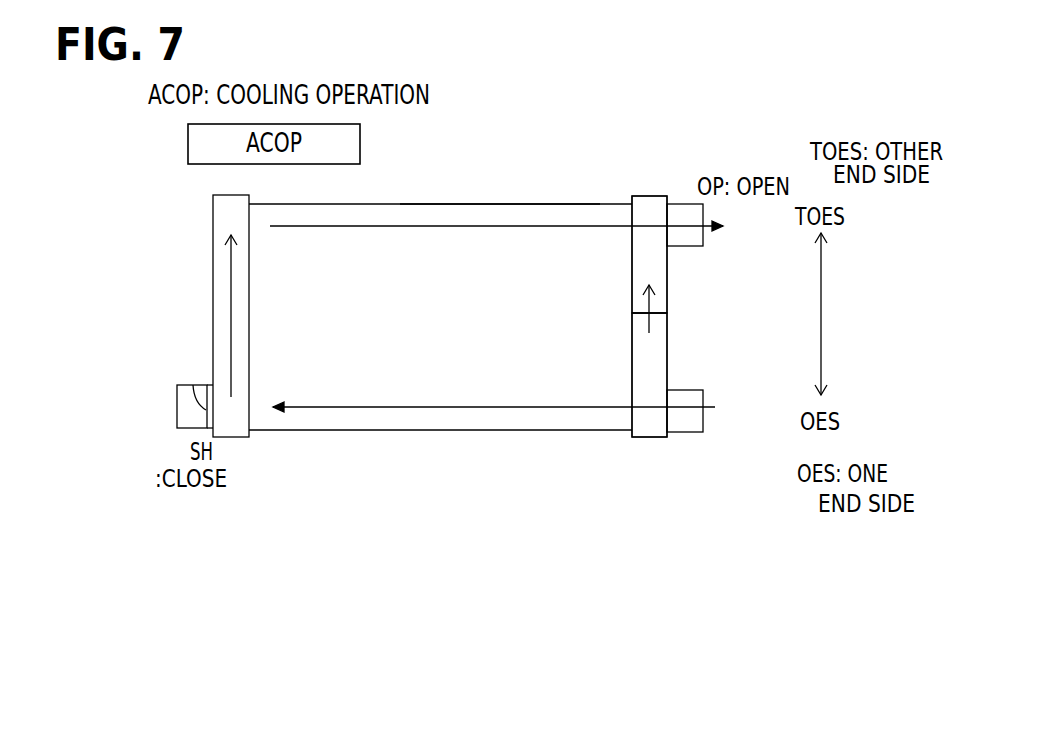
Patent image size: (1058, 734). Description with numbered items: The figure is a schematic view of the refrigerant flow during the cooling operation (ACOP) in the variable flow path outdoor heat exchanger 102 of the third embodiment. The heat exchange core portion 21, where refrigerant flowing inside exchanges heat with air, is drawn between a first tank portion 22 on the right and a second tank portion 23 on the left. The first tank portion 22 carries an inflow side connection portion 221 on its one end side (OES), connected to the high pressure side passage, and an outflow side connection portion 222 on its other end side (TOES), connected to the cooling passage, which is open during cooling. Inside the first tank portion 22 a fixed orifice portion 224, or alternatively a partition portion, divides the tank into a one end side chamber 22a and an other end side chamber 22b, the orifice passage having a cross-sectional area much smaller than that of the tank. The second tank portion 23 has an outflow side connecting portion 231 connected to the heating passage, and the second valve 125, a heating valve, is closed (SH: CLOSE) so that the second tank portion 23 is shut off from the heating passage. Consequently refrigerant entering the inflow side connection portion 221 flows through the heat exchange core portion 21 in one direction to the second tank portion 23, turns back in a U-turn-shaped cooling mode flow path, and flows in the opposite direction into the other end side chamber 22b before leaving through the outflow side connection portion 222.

The heat exchange core portion 21 is at (432, 268).
The outdoor heat exchanger 102 is at (490, 193).
The second tank portion 23 is at (232, 437).
The outflow side connecting portion 231 is at (182, 428).
The second valve 125 is at (193, 385).
The first tank portion 22 is at (652, 437).
The one end side chamber 22a is at (650, 365).
The other end side chamber 22b is at (648, 258).
The fixed orifice portion 224 is at (672, 325).
The outflow side connection portion 222 is at (678, 204).
The inflow side connection portion 221 is at (688, 432).